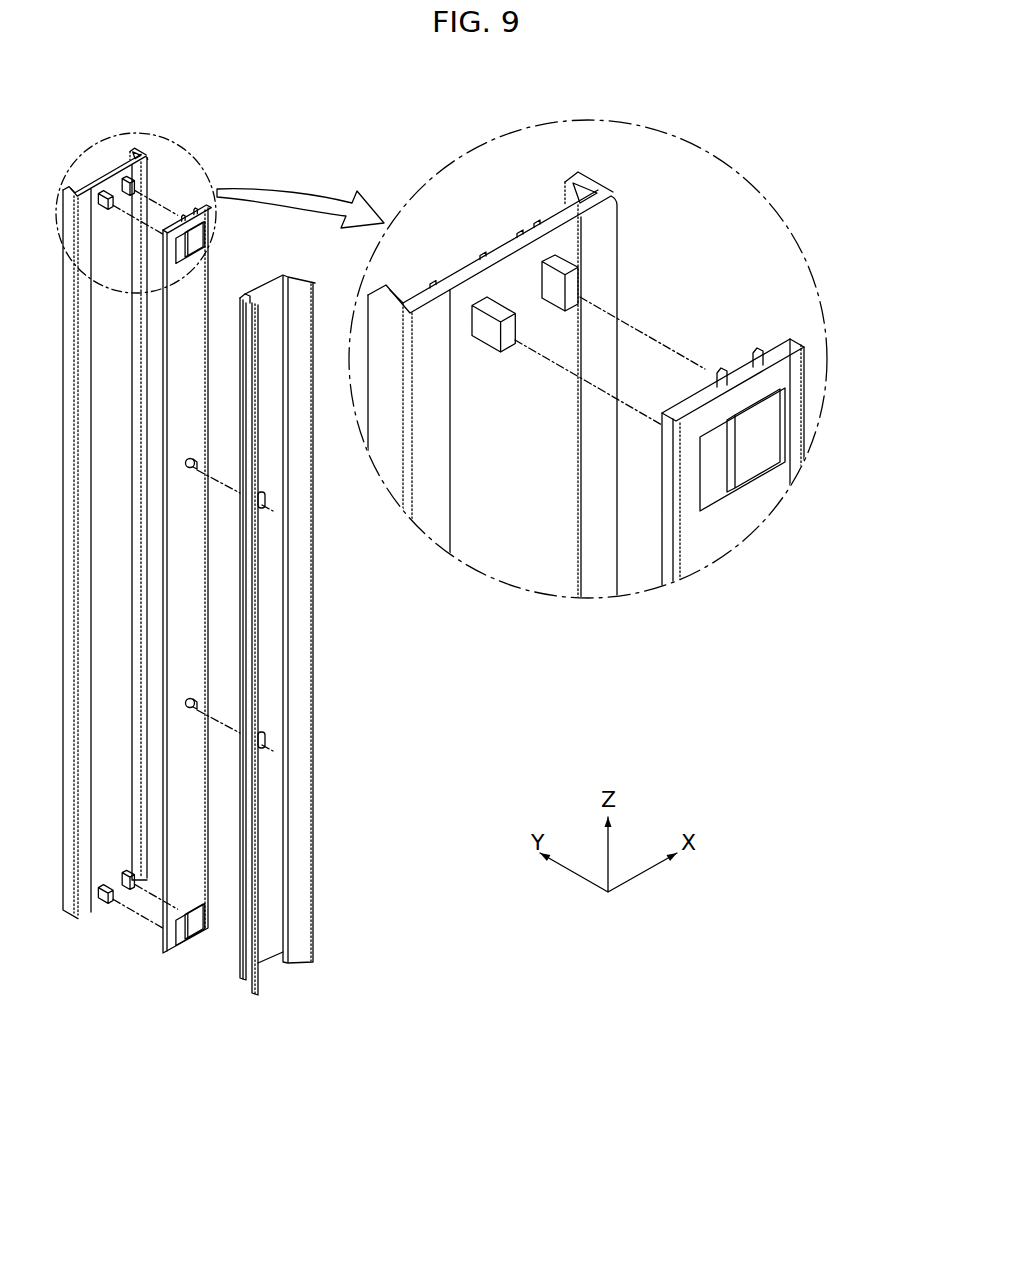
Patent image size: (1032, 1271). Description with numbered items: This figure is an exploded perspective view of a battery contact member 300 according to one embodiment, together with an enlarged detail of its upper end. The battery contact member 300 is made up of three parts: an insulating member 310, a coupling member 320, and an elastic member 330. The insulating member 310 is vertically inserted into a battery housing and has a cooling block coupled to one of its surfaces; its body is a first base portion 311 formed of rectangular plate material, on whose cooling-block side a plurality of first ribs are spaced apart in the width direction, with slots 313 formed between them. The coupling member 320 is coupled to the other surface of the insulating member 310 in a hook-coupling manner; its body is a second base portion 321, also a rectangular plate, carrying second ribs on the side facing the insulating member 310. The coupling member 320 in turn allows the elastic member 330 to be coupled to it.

The battery contact member 300 is at (358, 95).
The insulating member 310 is at (152, 173).
The first base portion 311 is at (480, 542).
The slots 313 is at (517, 233).
The coupling member 320 is at (158, 958).
The second base portion 321 is at (777, 357).
The elastic member 330 is at (330, 777).